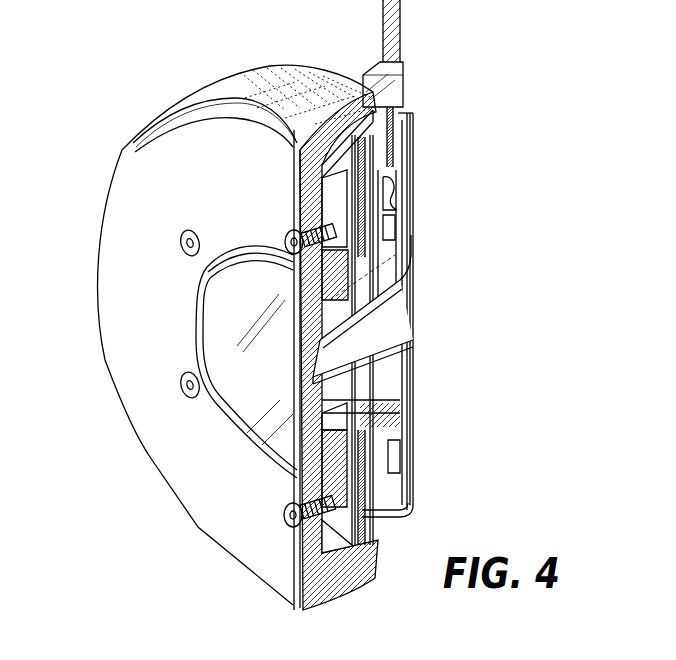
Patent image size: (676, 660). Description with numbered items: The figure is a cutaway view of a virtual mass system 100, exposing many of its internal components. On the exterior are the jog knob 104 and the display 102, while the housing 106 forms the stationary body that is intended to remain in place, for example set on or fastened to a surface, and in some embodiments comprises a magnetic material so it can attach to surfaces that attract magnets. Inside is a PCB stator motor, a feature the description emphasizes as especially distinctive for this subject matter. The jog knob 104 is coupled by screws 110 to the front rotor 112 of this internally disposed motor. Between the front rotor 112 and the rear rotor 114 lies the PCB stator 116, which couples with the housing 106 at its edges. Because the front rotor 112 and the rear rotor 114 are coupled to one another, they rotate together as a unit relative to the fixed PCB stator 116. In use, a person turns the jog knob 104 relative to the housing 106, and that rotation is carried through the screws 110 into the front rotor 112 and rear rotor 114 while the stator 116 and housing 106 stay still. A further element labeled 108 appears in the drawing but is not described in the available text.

The virtual mass system 100 is at (183, 51).
The display 102 is at (227, 327).
The jog knob 104 is at (114, 312).
The housing 106 is at (400, 353).
The pin 108 is at (375, 88).
The screws 110 is at (292, 231).
The front rotor 112 is at (338, 260).
The rear rotor 114 is at (372, 248).
The PCB stator 116 is at (343, 153).